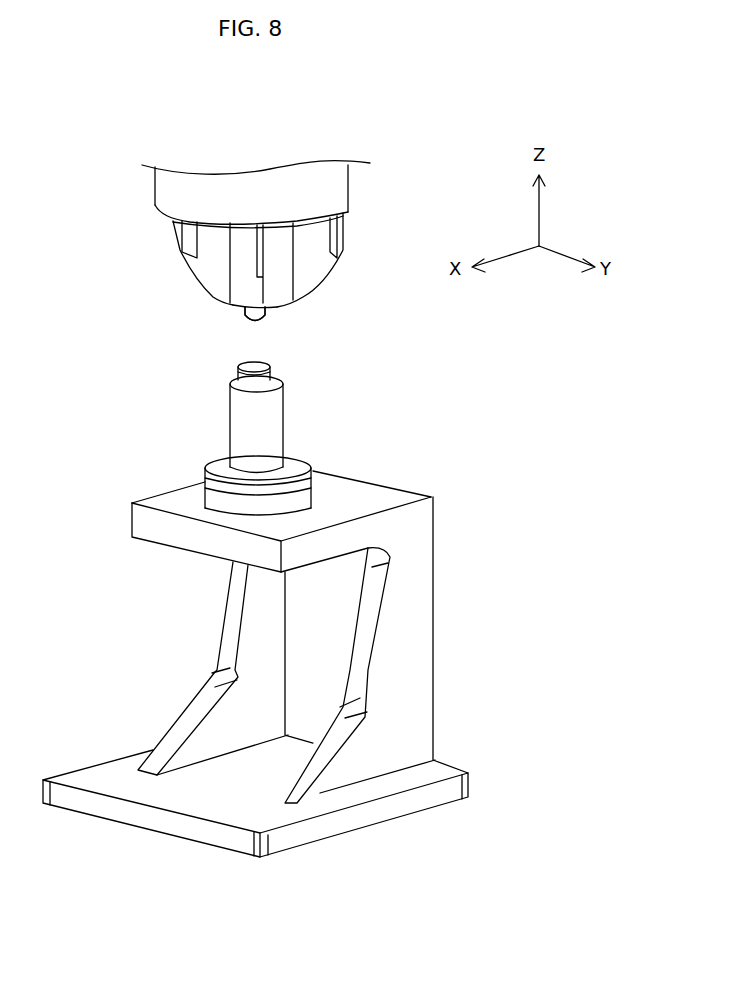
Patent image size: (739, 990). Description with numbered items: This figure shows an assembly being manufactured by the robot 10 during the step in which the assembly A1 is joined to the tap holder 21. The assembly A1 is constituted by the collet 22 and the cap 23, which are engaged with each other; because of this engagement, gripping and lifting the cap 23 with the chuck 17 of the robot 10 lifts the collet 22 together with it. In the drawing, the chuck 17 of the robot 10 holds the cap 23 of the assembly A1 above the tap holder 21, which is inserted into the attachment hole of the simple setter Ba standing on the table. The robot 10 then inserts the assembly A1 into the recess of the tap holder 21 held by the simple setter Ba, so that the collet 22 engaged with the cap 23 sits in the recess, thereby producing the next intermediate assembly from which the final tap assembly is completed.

The robot 10 is at (123, 183).
The chuck 17 is at (177, 253).
The cap 23 is at (243, 306).
The collet 22 is at (257, 328).
The assembly A1 is at (82, 327).
The tap holder 21 is at (283, 428).
The simple setter Ba is at (395, 813).